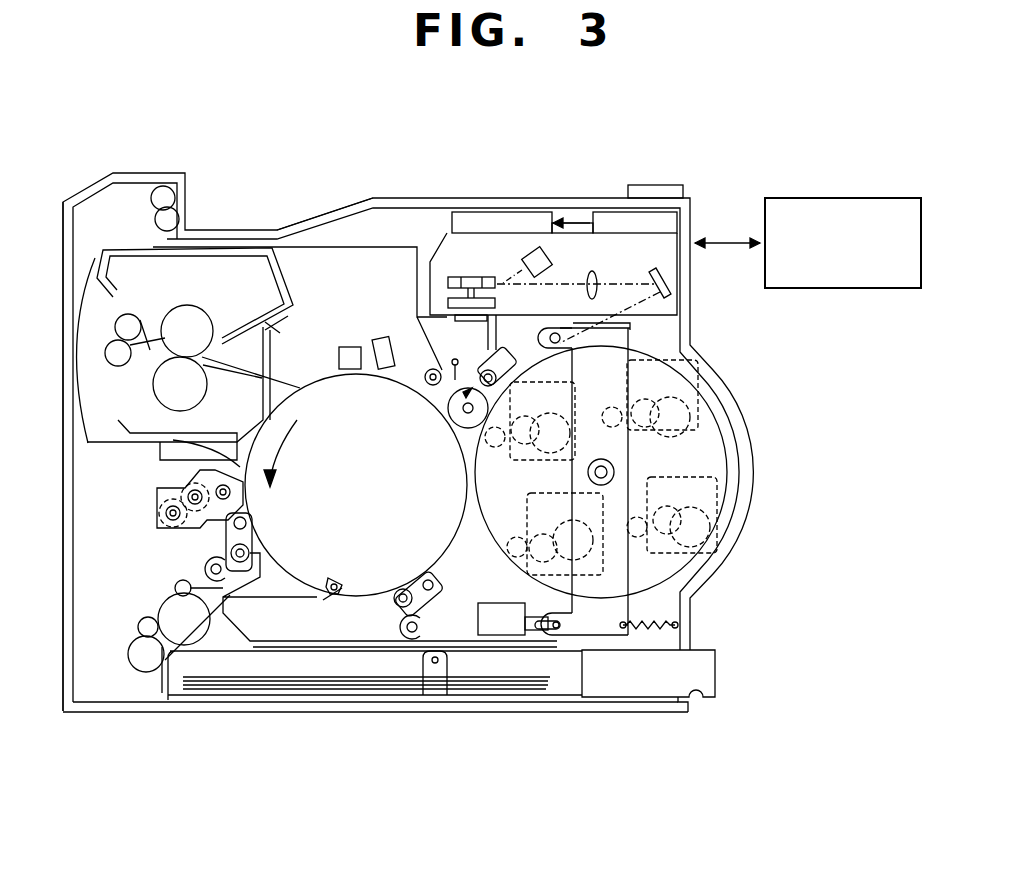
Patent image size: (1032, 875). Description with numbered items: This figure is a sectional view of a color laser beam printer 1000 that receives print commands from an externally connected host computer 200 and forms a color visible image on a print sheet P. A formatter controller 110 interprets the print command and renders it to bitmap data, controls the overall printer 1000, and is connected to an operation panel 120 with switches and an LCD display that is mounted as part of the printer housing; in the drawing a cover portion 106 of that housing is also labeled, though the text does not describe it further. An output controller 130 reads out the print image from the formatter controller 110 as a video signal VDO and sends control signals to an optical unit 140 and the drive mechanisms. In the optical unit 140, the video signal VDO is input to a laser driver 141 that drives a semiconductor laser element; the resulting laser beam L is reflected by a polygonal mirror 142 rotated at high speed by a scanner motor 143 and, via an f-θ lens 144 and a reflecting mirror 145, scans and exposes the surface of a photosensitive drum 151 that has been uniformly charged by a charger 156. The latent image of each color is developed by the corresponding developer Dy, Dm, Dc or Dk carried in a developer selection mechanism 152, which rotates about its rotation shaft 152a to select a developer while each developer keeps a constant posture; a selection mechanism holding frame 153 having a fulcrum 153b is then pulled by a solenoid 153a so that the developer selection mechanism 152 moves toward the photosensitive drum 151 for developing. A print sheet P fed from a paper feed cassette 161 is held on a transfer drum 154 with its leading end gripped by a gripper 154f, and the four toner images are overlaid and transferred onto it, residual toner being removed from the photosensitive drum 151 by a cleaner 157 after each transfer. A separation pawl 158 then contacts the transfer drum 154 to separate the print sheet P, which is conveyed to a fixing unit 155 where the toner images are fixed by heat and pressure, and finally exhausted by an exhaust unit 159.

The upper cover 106 is at (324, 212).
The formatter controller 110 is at (606, 212).
The operation panel 120 is at (663, 185).
The output controller 130 is at (462, 212).
The optical unit 140 is at (430, 250).
The laser driver 141 is at (527, 233).
The polygonal mirror 142 is at (490, 262).
The scanner motor 143 is at (445, 304).
The f-θ lens 144 is at (598, 285).
The reflecting mirror 145 is at (672, 288).
The photosensitive drum 151 is at (453, 445).
The developer selection mechanism 152 is at (722, 425).
The rotation shaft 152a is at (614, 471).
The selection mechanism holding frame 153 is at (597, 599).
The solenoid 153a is at (480, 603).
The fulcrum 153b is at (557, 337).
The transfer drum 154 is at (352, 597).
The gripper 154f is at (338, 580).
The fixing unit 155 is at (100, 393).
The charger 156 is at (480, 370).
The cleaner 157 is at (450, 363).
The separation pawl 158 is at (292, 357).
The exhaust unit 159 is at (177, 205).
The paper feed cassette 161 is at (716, 661).
The host computer 200 is at (878, 198).
The printer 1000 is at (389, 748).
The print sheet P is at (187, 667).
The laser beam L is at (583, 289).
The video signal VDO is at (561, 255).
The Y developer Dy is at (578, 372).
The M developer Dm is at (752, 490).
The C developer Dc is at (695, 380).
The Bk developer Dk is at (500, 490).